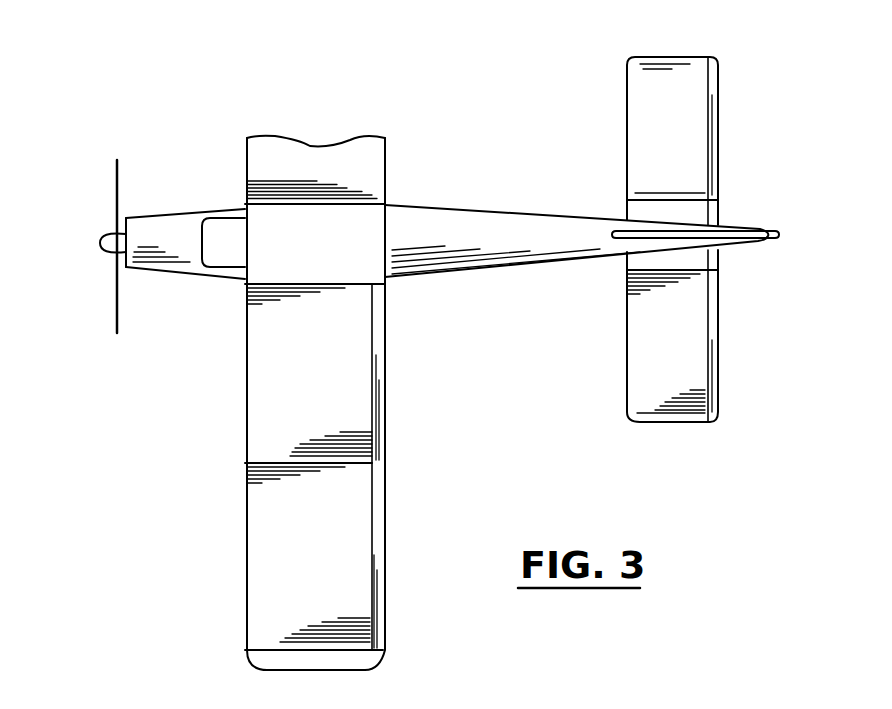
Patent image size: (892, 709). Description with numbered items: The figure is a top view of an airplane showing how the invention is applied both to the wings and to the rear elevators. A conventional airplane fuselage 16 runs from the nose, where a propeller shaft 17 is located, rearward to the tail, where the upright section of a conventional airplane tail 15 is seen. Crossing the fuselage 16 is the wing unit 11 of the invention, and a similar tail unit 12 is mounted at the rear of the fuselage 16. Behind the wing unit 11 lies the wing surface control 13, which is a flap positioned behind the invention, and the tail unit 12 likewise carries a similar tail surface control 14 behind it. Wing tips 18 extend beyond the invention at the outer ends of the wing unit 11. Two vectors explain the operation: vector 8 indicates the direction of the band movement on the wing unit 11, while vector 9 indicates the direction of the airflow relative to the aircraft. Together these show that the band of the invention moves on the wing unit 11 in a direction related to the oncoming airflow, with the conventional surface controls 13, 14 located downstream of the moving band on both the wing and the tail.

The band movement vector 8 is at (297, 522).
The airflow vector 9 is at (190, 420).
The wing unit 11 is at (265, 170).
The tail unit 12 is at (637, 117).
The wing surface control 13 is at (375, 313).
The tail surface control 14 is at (712, 141).
The upright section of airplane tail 15 is at (738, 232).
The airplane fuselage 16 is at (445, 222).
The propeller shaft 17 is at (104, 240).
The wing tip 18 is at (358, 656).